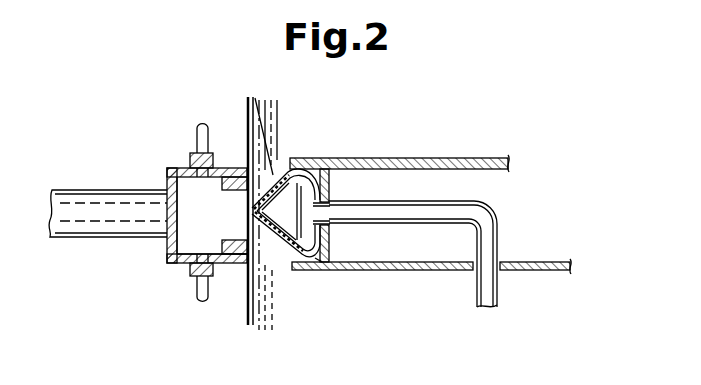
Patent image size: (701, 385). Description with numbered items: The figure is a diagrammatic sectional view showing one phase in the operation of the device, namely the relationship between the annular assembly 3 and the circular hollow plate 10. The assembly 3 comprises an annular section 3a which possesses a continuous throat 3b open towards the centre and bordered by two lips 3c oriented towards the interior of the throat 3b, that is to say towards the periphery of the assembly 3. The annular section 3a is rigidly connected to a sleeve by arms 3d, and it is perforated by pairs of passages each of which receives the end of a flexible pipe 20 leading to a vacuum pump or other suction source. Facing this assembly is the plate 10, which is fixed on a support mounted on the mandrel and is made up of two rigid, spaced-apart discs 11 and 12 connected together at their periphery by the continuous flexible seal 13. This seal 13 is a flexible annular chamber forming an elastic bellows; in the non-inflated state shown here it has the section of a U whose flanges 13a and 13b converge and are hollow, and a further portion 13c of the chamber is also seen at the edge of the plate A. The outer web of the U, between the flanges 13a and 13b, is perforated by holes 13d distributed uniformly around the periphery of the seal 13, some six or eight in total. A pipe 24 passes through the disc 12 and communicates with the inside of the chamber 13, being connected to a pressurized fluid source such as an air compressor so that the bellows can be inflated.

The assembly 3 is at (160, 165).
The annular section 3a is at (167, 258).
The continuous throat 3b is at (200, 228).
The lips 3c is at (228, 180).
The arms 3d is at (87, 204).
The flexible pipes 20 is at (197, 130).
The panel edge A is at (252, 104).
The circular hollow plate 10 is at (430, 203).
The disc 11 is at (363, 162).
The disc 12 is at (386, 270).
The continuous flexible seal 13 is at (272, 178).
The flange 13a is at (255, 192).
The flange 13b is at (275, 245).
The strip lower lip 13c is at (320, 268).
The holes 13d is at (298, 210).
The pipe 24 is at (492, 293).